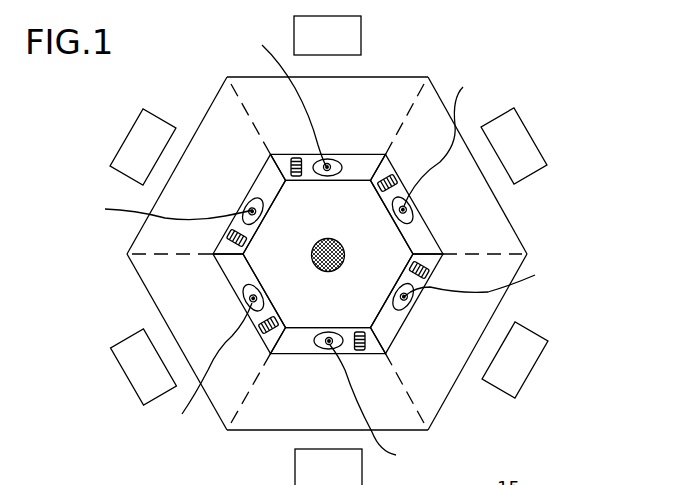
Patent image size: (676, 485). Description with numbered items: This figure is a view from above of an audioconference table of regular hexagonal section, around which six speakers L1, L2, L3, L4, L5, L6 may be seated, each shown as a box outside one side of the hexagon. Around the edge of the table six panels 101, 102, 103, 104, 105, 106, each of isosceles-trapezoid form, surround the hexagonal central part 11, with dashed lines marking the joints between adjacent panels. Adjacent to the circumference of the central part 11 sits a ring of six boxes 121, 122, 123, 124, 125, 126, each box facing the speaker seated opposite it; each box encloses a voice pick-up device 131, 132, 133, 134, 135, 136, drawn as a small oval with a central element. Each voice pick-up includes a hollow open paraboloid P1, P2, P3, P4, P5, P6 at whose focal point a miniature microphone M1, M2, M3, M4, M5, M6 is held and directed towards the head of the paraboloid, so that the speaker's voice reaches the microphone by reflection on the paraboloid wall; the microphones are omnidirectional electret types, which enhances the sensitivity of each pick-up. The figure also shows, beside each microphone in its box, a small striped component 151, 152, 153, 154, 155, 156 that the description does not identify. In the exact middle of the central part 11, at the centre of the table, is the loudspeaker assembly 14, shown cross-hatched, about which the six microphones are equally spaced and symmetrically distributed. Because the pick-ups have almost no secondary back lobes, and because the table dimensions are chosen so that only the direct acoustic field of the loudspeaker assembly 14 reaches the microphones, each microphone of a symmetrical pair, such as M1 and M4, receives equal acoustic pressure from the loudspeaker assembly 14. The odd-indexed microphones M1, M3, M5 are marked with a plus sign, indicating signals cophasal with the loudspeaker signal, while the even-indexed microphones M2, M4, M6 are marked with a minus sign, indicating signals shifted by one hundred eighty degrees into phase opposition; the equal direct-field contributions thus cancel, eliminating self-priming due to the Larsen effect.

The hexagonal central part 11 is at (300, 251).
The loudspeaker assembly 14 is at (338, 242).
The panel 101 is at (260, 425).
The panel 102 is at (143, 271).
The panel 103 is at (221, 109).
The panel 104 is at (403, 82).
The panel 105 is at (520, 236).
The panel 106 is at (438, 405).
The box 121 is at (298, 338).
The box 122 is at (247, 270).
The box 123 is at (276, 191).
The box 124 is at (353, 180).
The box 125 is at (412, 237).
The box 126 is at (387, 311).
The voice pick-up device 131 is at (322, 349).
The voice pick-up device 132 is at (248, 302).
The voice pick-up device 133 is at (253, 199).
The voice pick-up device 134 is at (342, 160).
The voice pick-up device 135 is at (413, 216).
The voice pick-up device 136 is at (406, 316).
The coil element 1 151 is at (365, 352).
The coil element 2 152 is at (267, 327).
The coil element 3 153 is at (231, 234).
The coil element 4 154 is at (297, 158).
The coil element 5 155 is at (395, 177).
The coil element 6 156 is at (423, 269).
The microphone M1 is at (309, 372).
The microphone M2 is at (228, 303).
The microphone M3 is at (230, 185).
The microphone M4 is at (349, 141).
The microphone M5 is at (433, 210).
The microphone M6 is at (433, 317).
The paraboloid P1 is at (372, 410).
The paraboloid P2 is at (206, 372).
The paraboloid P3 is at (170, 217).
The paraboloid P4 is at (283, 96).
The paraboloid P5 is at (440, 135).
The paraboloid P6 is at (478, 277).
The speaker L1 is at (328, 467).
The speaker L2 is at (144, 367).
The speaker L3 is at (143, 147).
The speaker L4 is at (327, 35).
The speaker L5 is at (514, 146).
The speaker L6 is at (515, 360).